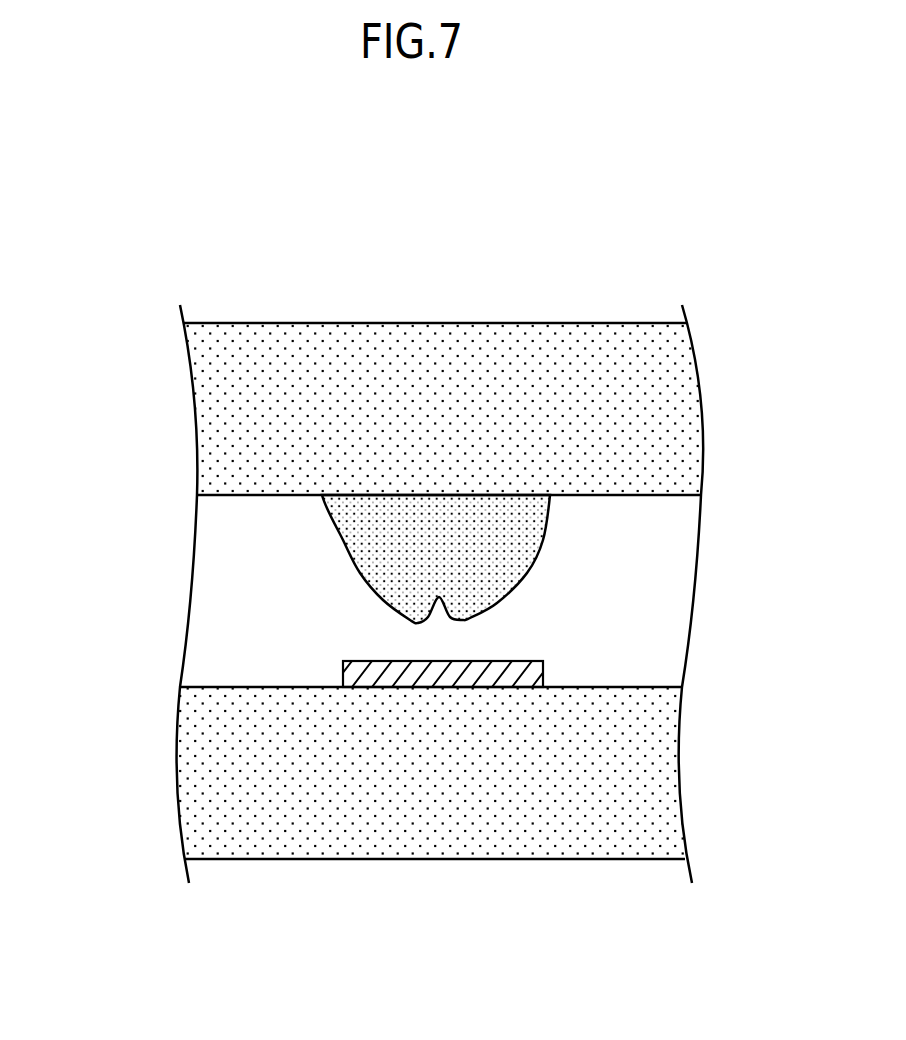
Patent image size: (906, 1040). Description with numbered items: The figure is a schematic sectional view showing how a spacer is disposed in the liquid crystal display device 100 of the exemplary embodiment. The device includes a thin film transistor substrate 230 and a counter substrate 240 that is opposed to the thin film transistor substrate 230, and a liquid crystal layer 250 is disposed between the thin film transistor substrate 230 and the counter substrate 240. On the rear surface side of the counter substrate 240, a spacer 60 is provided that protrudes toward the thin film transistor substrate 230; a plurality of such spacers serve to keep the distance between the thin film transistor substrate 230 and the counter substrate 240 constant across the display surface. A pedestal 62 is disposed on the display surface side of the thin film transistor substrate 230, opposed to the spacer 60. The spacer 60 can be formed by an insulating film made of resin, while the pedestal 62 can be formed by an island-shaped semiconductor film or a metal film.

The liquid crystal display device 100 is at (658, 282).
The counter substrate 240 is at (113, 323).
The liquid crystal layer 250 is at (113, 498).
The thin film transistor substrate 230 is at (113, 688).
The spacer 60 is at (534, 557).
The pedestal 62 is at (543, 674).